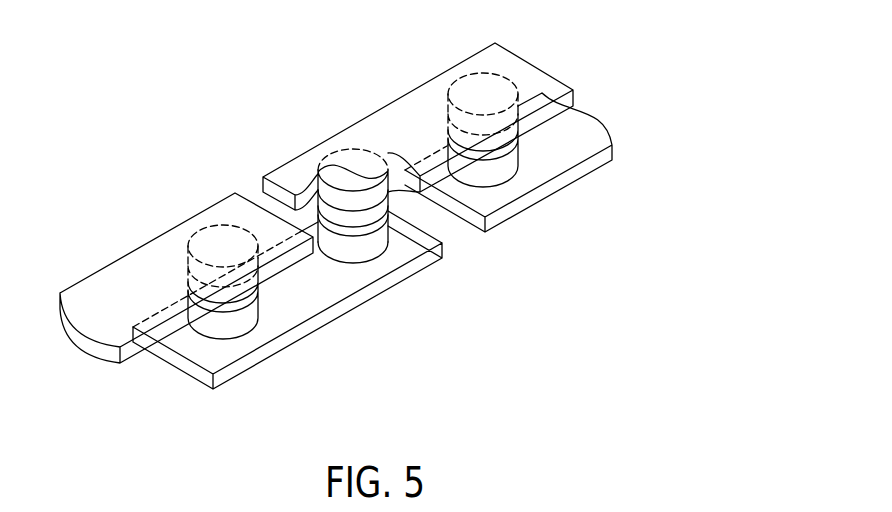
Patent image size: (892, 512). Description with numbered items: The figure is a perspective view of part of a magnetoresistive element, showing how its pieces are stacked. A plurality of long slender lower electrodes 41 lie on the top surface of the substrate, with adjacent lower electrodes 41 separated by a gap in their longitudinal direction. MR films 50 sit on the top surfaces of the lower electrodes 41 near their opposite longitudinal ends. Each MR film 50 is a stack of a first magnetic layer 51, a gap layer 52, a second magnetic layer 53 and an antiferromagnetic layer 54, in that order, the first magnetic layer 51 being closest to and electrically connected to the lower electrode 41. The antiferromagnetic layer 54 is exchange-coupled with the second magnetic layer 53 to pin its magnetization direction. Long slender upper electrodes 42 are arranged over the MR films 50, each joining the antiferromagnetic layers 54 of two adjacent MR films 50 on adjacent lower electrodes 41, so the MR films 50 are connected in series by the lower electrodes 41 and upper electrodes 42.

The lower electrode 41 is at (272, 352).
The upper electrode 42 is at (158, 247).
The MR film 50 is at (196, 342).
The first magnetic layer 51 is at (360, 257).
The gap layer 52 is at (373, 235).
The second magnetic layer 53 is at (388, 230).
The antiferromagnetic layer 54 is at (392, 212).